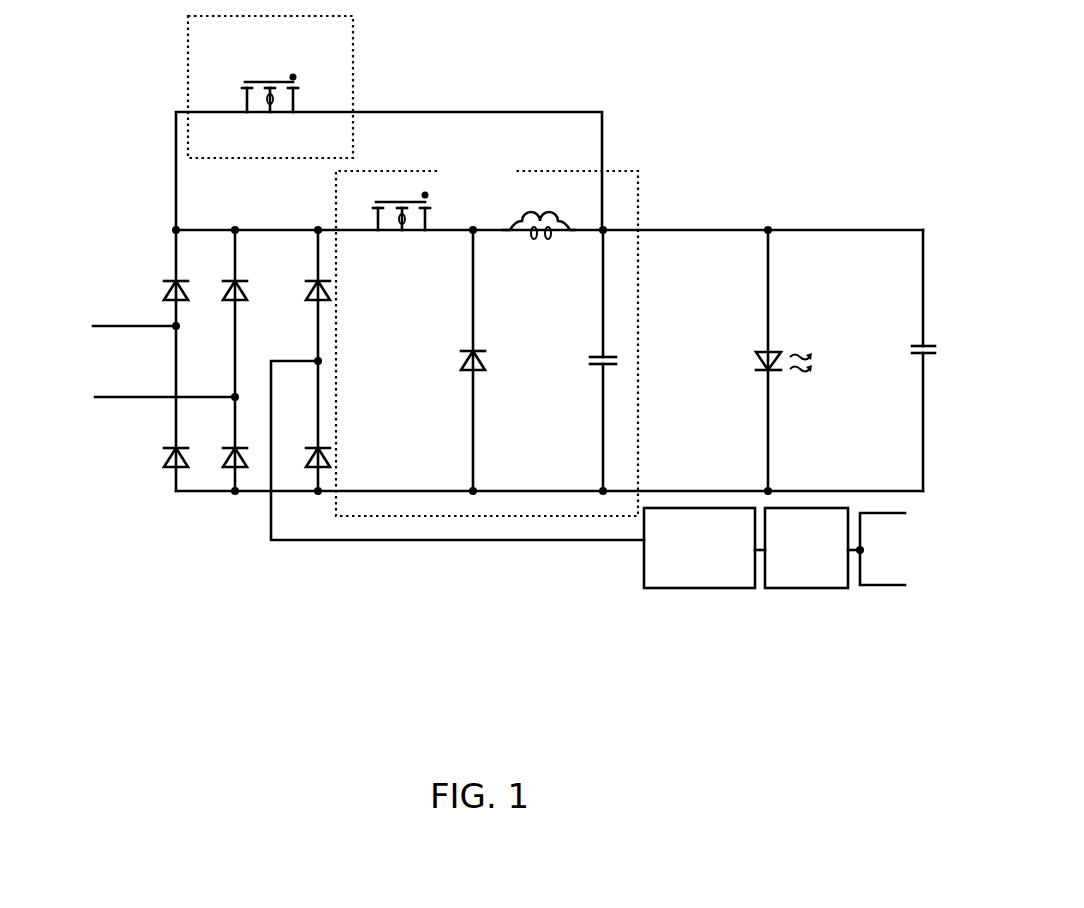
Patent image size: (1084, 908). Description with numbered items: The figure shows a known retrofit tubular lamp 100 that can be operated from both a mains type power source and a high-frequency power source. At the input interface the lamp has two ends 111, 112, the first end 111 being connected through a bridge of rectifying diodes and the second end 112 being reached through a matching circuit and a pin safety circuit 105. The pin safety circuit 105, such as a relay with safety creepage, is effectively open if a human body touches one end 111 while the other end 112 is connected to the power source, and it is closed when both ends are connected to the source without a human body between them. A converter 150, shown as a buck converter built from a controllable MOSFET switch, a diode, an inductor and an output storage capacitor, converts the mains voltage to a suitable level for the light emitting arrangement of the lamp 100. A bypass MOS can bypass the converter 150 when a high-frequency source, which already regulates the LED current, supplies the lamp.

The retrofit tubular lamp 100 is at (255, 660).
The end of input interface 111 is at (93, 419).
The converter 150 is at (435, 503).
The pin safety circuit 105 is at (782, 597).
The end of input interface 112 is at (875, 607).